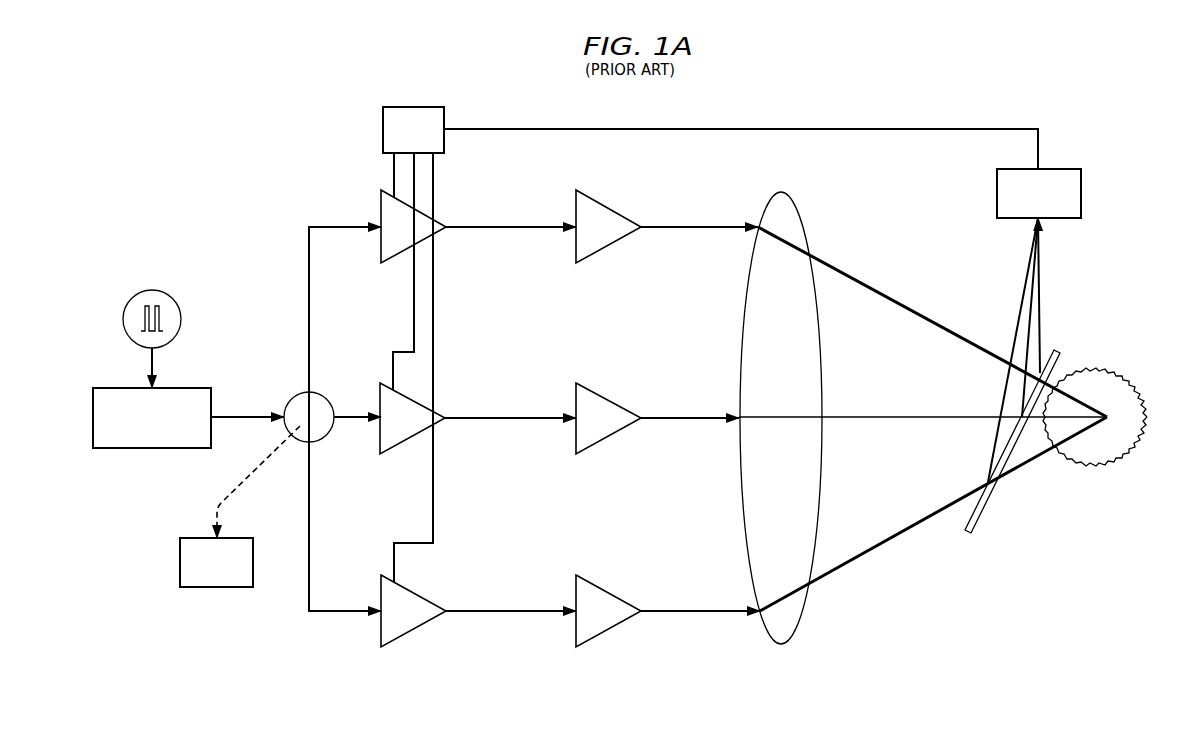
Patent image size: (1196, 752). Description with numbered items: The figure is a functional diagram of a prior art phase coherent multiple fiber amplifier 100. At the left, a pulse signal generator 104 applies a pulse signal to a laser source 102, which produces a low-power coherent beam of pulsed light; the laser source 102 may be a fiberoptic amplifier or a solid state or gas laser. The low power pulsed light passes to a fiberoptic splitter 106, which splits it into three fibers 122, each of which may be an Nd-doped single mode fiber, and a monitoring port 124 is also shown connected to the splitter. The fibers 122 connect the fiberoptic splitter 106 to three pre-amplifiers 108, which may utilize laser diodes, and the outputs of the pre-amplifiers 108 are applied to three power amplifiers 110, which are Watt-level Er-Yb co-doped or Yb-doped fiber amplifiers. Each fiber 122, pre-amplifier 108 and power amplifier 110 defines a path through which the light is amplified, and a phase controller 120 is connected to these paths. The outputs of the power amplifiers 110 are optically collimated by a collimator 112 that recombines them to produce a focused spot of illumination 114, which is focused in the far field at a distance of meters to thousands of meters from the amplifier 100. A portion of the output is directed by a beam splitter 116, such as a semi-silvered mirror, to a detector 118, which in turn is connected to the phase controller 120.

The phase coherent multiple fiber amplifier 100 is at (149, 170).
The laser source 102 is at (125, 448).
The pulse signal generator 104 is at (181, 315).
The fiberoptic splitter 106 is at (288, 398).
The pre-amplifiers 108 is at (411, 645).
The power amplifiers 110 is at (606, 645).
The collimator 112 is at (805, 612).
The focused spot of illumination 114 is at (1135, 403).
The beam splitter 116 is at (1062, 360).
The detector 118 is at (1081, 180).
The phase controller 120 is at (403, 107).
The fibers 122 is at (385, 367).
The monitoring port 124 is at (215, 587).